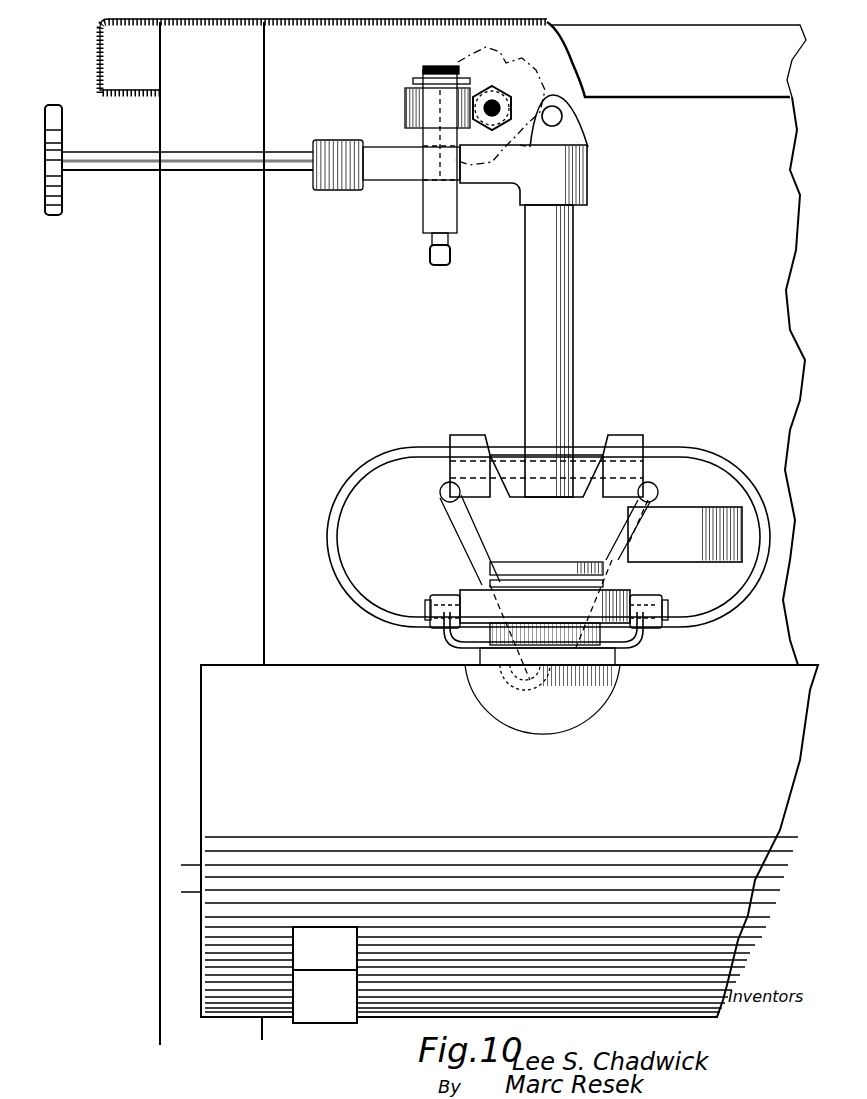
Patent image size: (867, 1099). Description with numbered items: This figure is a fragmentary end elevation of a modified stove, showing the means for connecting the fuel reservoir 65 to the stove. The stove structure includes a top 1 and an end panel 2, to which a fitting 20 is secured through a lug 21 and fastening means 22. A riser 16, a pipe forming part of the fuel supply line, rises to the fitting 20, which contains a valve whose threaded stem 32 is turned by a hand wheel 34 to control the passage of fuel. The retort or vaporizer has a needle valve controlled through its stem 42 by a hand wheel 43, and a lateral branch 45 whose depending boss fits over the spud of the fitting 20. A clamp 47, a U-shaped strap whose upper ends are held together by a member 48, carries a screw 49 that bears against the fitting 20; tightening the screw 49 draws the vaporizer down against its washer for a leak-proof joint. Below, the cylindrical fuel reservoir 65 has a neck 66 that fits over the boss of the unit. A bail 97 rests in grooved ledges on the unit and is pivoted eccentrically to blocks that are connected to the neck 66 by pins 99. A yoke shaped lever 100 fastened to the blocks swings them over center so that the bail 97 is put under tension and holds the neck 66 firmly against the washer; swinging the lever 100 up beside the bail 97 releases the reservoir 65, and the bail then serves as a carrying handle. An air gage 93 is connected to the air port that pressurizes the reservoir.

The top 1 is at (688, 28).
The end panel 2 is at (482, 533).
The riser 16 is at (565, 316).
The fitting 20 is at (587, 178).
The lug 21 is at (577, 128).
The fastening means 22 is at (556, 95).
The stem 32 is at (227, 152).
The hand wheel 34 is at (62, 208).
The stem 42 is at (492, 108).
The hand wheel 43 is at (470, 62).
The lateral branch 45 is at (405, 105).
The clamp 47 is at (423, 212).
The member 48 is at (413, 80).
The screw 49 is at (430, 258).
The fuel reservoir 65 is at (499, 844).
The neck 66 is at (545, 647).
The air gage 93 is at (685, 531).
The bail 97 is at (732, 472).
The pins 99 is at (425, 606).
The yoke shaped lever 100 is at (446, 640).